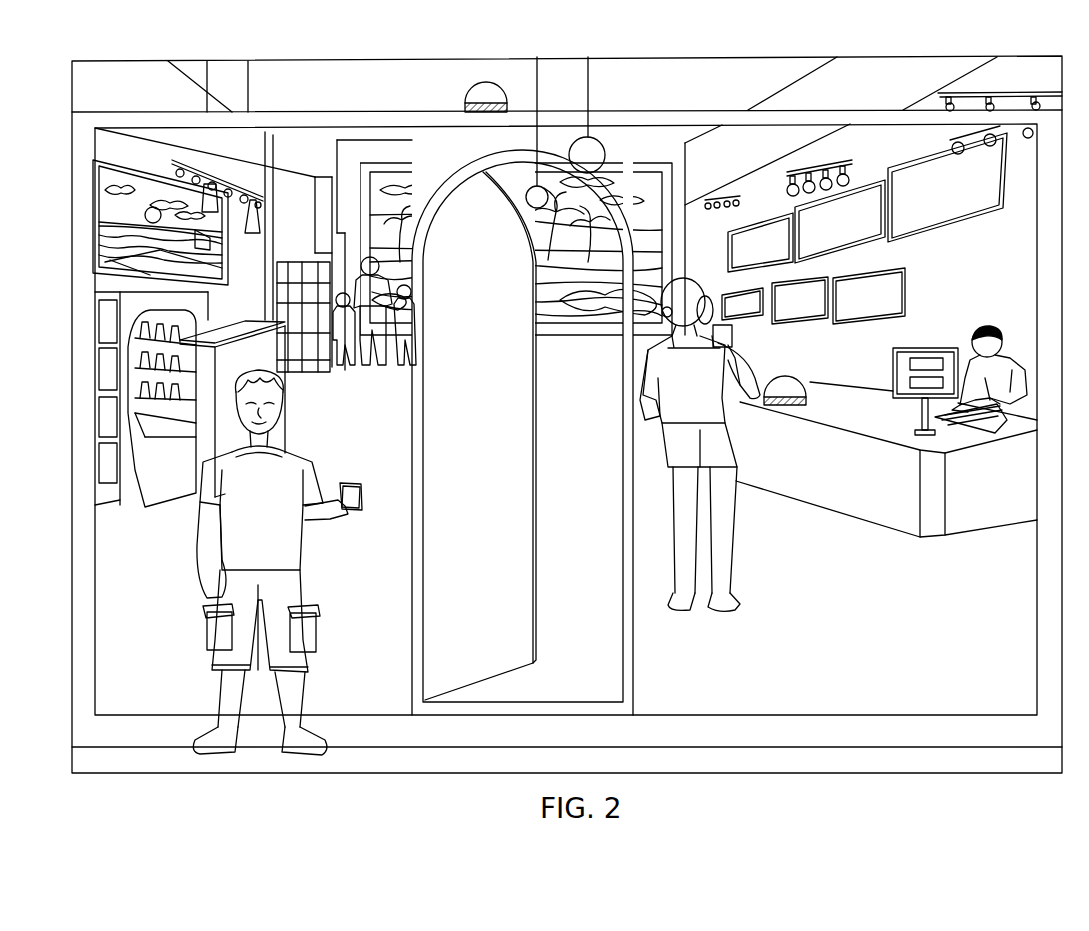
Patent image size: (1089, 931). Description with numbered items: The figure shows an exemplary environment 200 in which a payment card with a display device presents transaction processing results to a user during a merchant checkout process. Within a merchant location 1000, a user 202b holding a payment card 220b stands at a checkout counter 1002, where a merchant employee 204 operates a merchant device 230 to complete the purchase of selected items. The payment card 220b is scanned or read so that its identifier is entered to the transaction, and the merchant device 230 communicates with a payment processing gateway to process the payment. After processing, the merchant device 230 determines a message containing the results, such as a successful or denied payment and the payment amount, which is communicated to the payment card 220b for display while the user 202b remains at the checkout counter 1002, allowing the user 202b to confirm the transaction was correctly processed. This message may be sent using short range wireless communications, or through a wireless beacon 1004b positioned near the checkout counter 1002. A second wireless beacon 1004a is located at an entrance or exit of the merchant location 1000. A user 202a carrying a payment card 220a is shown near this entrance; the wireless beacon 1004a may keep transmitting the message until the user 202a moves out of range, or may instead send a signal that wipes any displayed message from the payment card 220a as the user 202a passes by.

The environment 200 is at (793, 50).
The user 202a is at (290, 558).
The user 202b is at (718, 542).
The merchant employee 204 is at (987, 325).
The payment card 220a is at (347, 485).
The payment card 220b is at (733, 333).
The merchant device 230 is at (933, 348).
The merchant location 1000 is at (882, 690).
The checkout counter 1002 is at (970, 497).
The wireless beacon 1004a is at (465, 90).
The wireless beacon 1004b is at (790, 377).